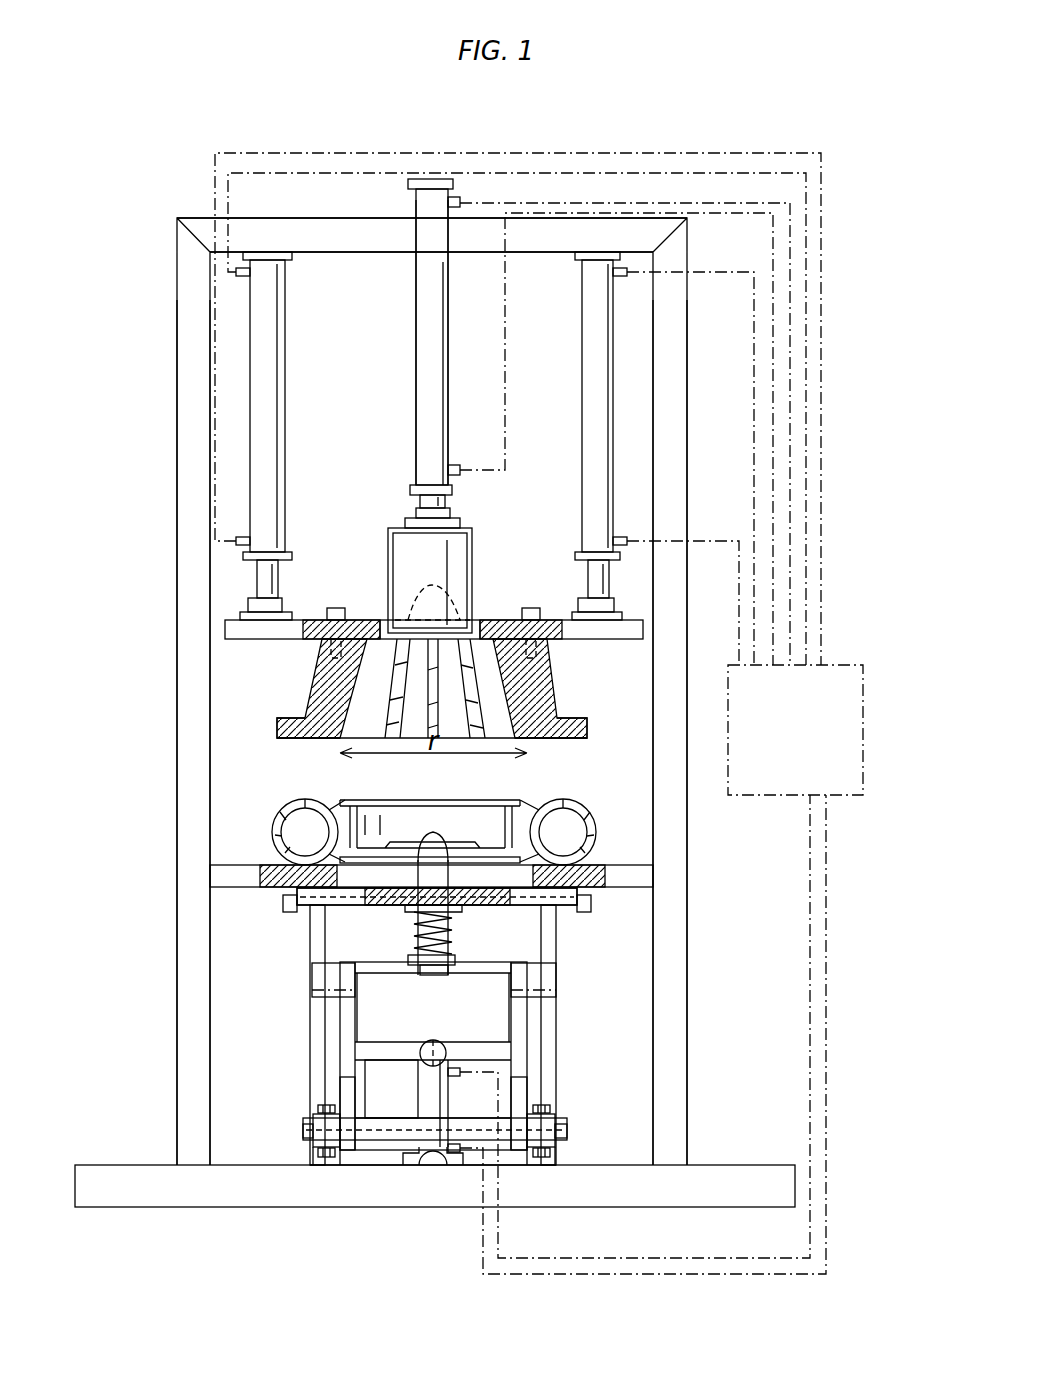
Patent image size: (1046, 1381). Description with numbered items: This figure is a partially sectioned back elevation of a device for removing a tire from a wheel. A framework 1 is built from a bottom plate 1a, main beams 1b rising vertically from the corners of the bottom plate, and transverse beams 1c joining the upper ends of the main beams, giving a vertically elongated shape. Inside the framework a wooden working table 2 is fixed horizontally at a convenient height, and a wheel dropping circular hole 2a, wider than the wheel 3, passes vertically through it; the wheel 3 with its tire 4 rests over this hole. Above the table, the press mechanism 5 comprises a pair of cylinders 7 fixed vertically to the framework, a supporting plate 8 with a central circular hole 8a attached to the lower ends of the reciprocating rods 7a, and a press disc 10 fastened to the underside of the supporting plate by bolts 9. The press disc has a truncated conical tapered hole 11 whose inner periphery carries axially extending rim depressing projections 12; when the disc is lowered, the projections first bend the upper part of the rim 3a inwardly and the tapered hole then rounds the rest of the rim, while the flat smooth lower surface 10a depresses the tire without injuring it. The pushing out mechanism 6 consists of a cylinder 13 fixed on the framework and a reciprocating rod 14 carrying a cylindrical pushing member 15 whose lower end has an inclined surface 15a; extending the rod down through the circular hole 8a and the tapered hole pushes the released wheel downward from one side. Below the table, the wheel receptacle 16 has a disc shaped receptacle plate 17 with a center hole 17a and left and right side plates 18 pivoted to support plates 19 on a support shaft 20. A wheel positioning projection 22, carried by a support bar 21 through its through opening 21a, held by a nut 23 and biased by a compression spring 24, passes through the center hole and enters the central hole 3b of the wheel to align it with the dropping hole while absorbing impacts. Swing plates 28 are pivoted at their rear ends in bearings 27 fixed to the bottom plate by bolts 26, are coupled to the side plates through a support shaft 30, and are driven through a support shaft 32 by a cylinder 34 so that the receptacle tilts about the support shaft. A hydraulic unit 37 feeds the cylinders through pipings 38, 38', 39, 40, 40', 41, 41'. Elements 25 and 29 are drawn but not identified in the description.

The framework 1 is at (172, 306).
The bottom plate 1a is at (160, 1192).
The main beams 1b is at (192, 420).
The transverse beams 1c is at (283, 218).
The working table 2 is at (236, 865).
The wheel dropping circular hole 2a is at (343, 873).
The wheel 3 is at (388, 803).
The rim 3a is at (520, 806).
The central hole 3b is at (445, 860).
The tire 4 is at (584, 815).
The press mechanism 5 is at (264, 670).
The pushing out mechanism 6 is at (400, 451).
The cylinders 7 is at (263, 323).
The reciprocating rods 7a is at (252, 573).
The supporting plate 8 is at (226, 632).
The circular hole 8a is at (468, 630).
The bolts 9 is at (335, 608).
The press disc 10 is at (316, 705).
The lower surface 10a is at (567, 739).
The tapered hole 11 is at (368, 717).
The rim depressing projections 12 is at (478, 674).
The cylinder 13 is at (418, 388).
The reciprocating rod 14 is at (420, 502).
The cylindrical pushing member 15 is at (471, 541).
The inclined surface 15a is at (418, 600).
The wheel receptacle 16 is at (254, 918).
The receptacle plate 17 is at (509, 903).
The center hole 17a is at (413, 895).
The side plates 18 is at (332, 998).
The support plates 19 is at (320, 1043).
The support shaft 20 is at (582, 913).
The support bar 21 is at (390, 952).
The through opening 21a is at (467, 962).
The wheel positioning projection 22 is at (447, 872).
The nut 23 is at (432, 972).
The compression spring 24 is at (452, 925).
The lower unit 25 is at (303, 1078).
The bolts 26 is at (327, 1158).
The bearings 27 is at (303, 1150).
The swing plates 28 is at (350, 1093).
The cross bar 29 is at (568, 1130).
The support shaft 30 is at (405, 1079).
The support shaft 32 is at (367, 1150).
The cylinder 34 is at (437, 1152).
The hydraulic unit 37 is at (775, 797).
The piping 38 is at (518, 385).
The piping 38' is at (517, 385).
The piping 39 is at (757, 311).
The piping 40 is at (625, 389).
The piping 40' is at (616, 389).
The piping 41 is at (629, 1060).
The piping 41' is at (637, 1060).